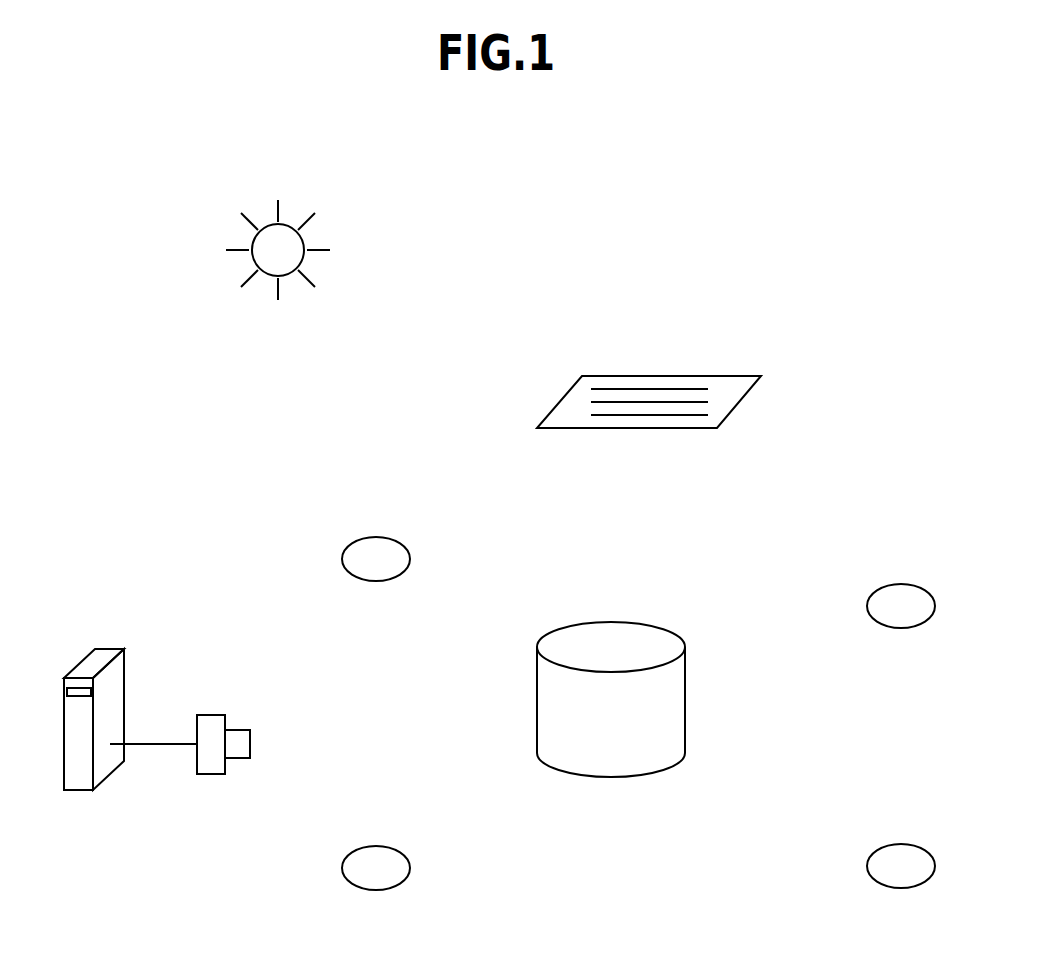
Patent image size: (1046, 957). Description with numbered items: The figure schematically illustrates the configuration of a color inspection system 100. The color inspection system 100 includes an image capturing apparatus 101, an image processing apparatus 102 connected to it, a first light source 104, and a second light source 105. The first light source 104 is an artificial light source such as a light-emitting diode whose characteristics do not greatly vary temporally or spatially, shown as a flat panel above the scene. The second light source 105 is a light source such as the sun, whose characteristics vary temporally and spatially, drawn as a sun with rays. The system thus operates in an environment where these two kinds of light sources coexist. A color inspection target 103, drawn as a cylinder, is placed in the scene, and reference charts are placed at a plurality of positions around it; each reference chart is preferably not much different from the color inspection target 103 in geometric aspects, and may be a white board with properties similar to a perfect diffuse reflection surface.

The color inspection system 100 is at (253, 835).
The image capturing apparatus 101 is at (212, 715).
The image processing apparatus 102 is at (110, 649).
The color inspection target 103 is at (613, 622).
The first light source 104 is at (666, 376).
The second light source 105 is at (285, 223).